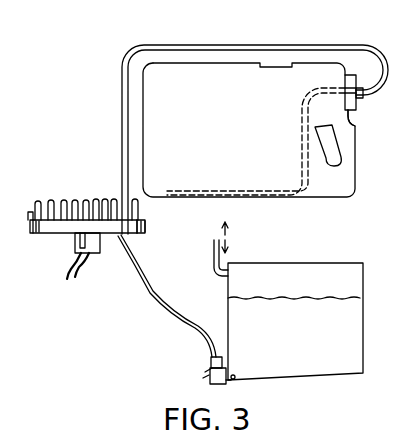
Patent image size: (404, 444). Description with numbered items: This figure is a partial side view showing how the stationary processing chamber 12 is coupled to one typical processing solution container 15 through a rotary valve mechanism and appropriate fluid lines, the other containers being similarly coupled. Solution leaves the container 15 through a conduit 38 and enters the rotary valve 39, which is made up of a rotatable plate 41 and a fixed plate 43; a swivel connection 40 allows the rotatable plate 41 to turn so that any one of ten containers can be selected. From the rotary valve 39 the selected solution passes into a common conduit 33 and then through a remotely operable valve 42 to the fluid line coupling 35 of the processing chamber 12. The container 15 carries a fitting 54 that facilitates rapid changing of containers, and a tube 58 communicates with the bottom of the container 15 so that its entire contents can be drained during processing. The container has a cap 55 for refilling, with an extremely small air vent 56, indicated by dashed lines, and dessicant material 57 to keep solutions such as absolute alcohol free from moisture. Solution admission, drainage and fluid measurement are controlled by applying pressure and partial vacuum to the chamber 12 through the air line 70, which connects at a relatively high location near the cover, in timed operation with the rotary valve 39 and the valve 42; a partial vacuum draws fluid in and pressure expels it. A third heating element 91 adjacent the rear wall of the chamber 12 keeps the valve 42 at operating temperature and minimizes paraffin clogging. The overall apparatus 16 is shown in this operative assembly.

The processing chamber 12 is at (309, 337).
The processing solution container 15 is at (279, 160).
The cooling system 16 is at (1, 86).
The common conduit 33 is at (177, 320).
The fluid line coupling 35 is at (234, 380).
The conduit 38 is at (252, 22).
The rotary valve 39 is at (62, 261).
The swivel connection 40 is at (121, 238).
The rotatable plate 41 is at (146, 230).
The valve 42 is at (212, 379).
The fixed plate 43 is at (33, 217).
The fitting 54 is at (363, 95).
The cap 55 is at (352, 116).
The air vent 56 is at (363, 72).
The dessicant material 57 is at (348, 74).
The tube 58 is at (303, 186).
The air line 70 is at (213, 258).
The third heating element 91 is at (210, 361).